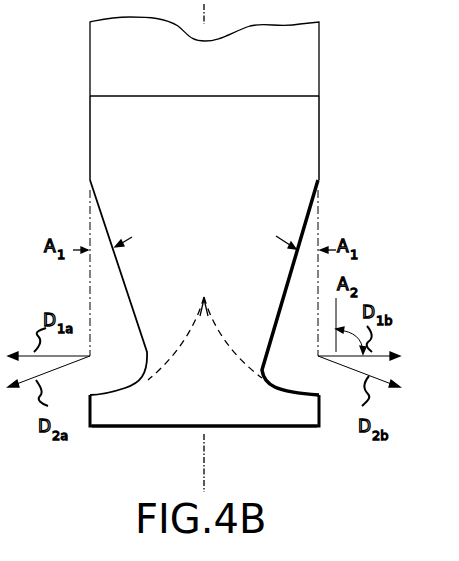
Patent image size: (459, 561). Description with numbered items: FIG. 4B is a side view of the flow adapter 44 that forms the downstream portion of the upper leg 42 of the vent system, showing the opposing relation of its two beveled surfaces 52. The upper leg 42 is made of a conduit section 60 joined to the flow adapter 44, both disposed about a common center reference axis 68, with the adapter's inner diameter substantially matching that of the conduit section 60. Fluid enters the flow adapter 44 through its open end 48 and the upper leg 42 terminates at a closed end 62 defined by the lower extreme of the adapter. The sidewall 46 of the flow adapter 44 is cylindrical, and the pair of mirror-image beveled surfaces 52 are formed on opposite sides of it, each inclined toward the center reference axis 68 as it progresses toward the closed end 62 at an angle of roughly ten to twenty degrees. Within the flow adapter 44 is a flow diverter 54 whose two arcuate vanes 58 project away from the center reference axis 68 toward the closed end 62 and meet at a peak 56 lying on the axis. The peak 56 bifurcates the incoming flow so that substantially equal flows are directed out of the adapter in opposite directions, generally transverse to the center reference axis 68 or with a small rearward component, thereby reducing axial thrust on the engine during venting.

The upper leg 42 is at (320, 50).
The flow adapter 44 is at (320, 148).
The sidewall 46 is at (295, 113).
The open end 48 is at (232, 92).
The beveled surfaces 52 is at (118, 275).
The flow diverter 54 is at (216, 376).
The peak 56 is at (205, 294).
The vanes 58 is at (186, 340).
The conduit section 60 is at (112, 60).
The closed end 62 is at (228, 430).
The center reference axis 68 is at (207, 476).